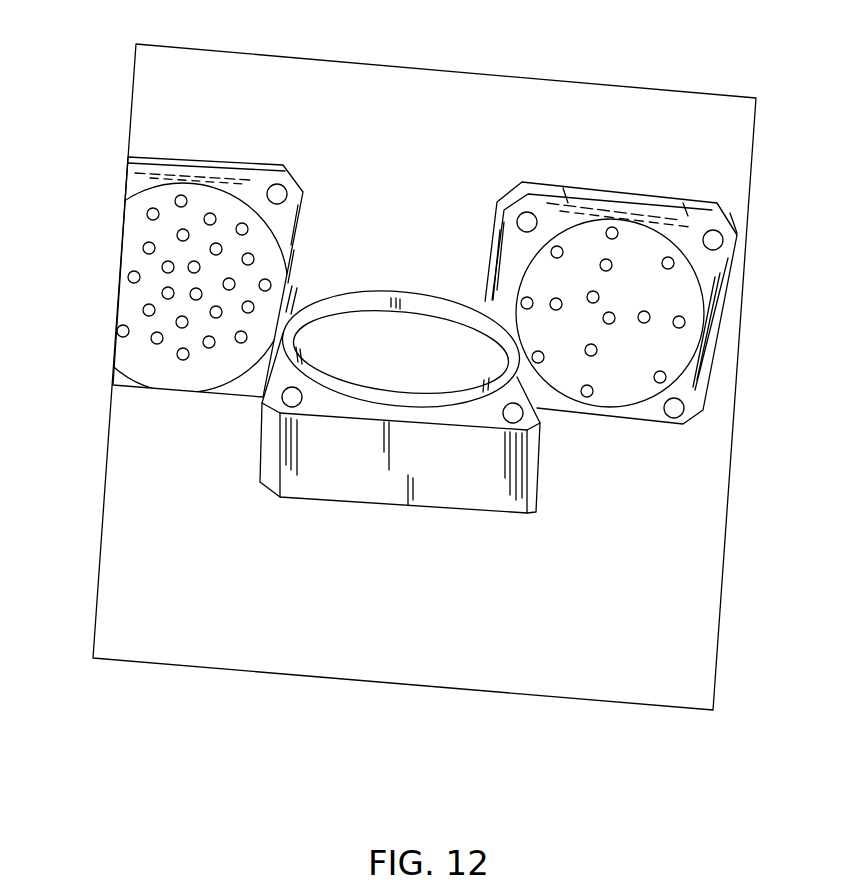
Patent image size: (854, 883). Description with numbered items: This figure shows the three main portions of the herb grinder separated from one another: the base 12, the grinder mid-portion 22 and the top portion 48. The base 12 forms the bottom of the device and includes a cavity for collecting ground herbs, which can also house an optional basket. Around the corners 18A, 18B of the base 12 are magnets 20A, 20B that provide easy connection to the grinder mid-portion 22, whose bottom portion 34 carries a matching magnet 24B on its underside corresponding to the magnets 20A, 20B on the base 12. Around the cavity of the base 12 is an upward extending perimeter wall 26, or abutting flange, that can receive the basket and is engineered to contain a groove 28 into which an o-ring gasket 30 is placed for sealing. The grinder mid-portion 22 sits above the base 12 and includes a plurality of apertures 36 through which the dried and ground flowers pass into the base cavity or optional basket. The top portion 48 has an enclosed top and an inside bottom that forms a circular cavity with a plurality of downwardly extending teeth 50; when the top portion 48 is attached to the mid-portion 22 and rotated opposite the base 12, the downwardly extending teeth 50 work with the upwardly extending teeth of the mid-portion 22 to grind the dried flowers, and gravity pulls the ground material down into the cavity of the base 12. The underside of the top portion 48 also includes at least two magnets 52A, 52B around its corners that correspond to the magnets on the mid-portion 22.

The base 12 is at (292, 517).
The corner of the base 18A is at (273, 495).
The corner of the base 18B is at (528, 500).
The magnet 20A is at (193, 387).
The magnet 20B is at (540, 423).
The grinder mid-portion 22 is at (143, 157).
The matching magnet 24B is at (278, 194).
The perimeter wall 26 is at (420, 423).
The groove 28 is at (473, 408).
The o-ring gasket 30 is at (358, 410).
The bottom portion of the mid-portion 34 is at (128, 170).
The apertures 36 is at (128, 277).
The top portion 48 is at (722, 203).
The downwardly extending teeth 50 is at (680, 323).
The magnet 52A is at (527, 217).
The magnet 52B is at (677, 410).